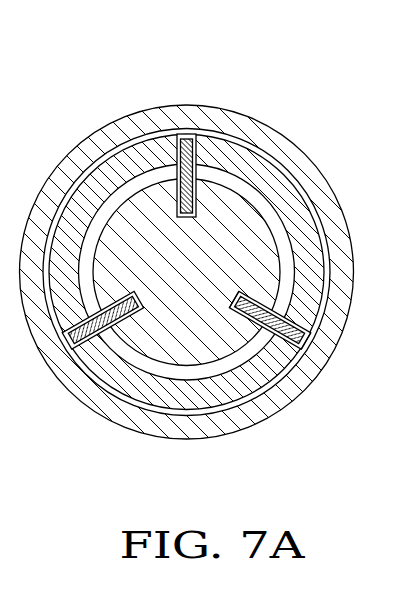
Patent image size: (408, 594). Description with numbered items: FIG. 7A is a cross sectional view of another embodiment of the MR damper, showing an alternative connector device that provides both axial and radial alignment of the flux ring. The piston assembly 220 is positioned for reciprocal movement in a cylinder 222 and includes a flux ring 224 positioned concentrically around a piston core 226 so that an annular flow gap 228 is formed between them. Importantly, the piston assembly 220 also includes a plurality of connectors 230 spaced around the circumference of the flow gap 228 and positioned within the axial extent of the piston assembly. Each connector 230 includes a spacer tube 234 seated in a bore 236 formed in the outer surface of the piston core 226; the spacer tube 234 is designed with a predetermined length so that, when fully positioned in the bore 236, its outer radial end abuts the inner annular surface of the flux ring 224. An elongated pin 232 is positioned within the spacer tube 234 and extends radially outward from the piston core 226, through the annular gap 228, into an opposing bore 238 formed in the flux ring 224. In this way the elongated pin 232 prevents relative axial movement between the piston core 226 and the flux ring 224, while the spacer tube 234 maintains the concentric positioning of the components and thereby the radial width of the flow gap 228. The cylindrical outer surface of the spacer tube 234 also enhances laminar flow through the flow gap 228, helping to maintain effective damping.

The piston assembly 220 is at (224, 130).
The cylinder 222 is at (125, 122).
The flux ring 224 is at (297, 218).
The piston core 226 is at (233, 215).
The flow gap 228 is at (105, 205).
The connectors 230 is at (90, 342).
The elongated pin 232 is at (294, 341).
The spacer tube 234 is at (250, 325).
The bore 236 is at (284, 343).
The opposing bore 238 is at (232, 320).